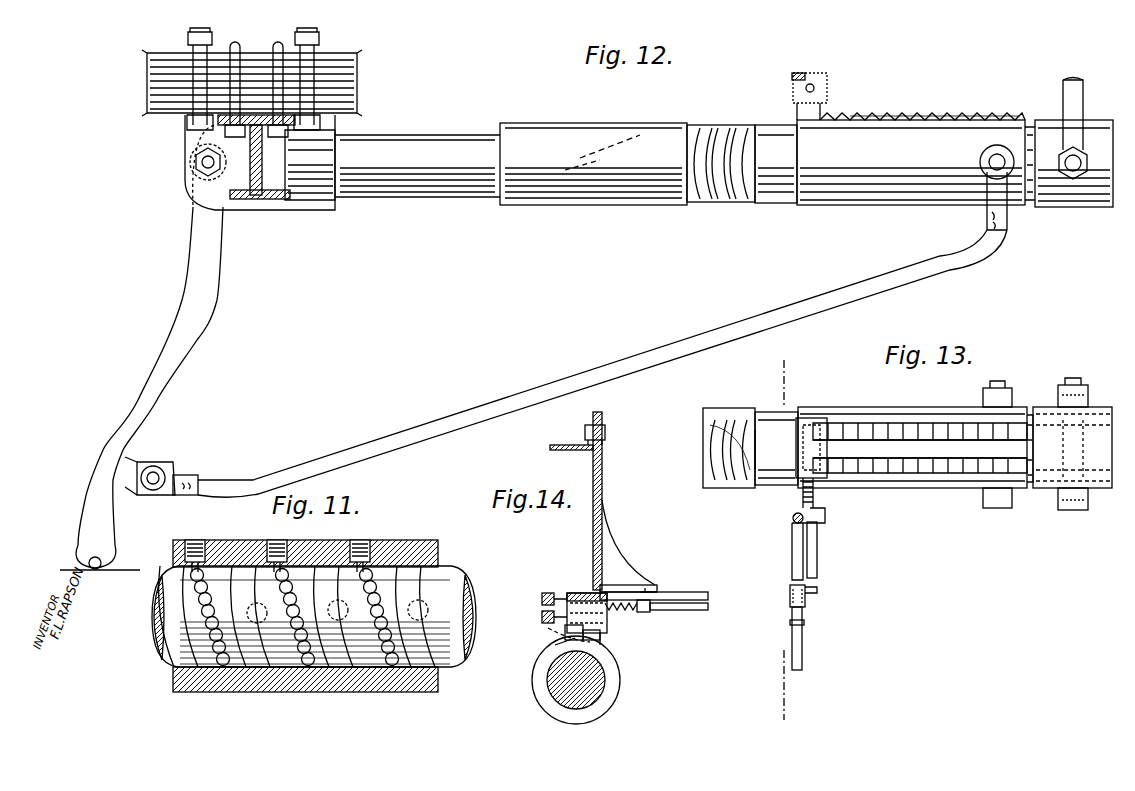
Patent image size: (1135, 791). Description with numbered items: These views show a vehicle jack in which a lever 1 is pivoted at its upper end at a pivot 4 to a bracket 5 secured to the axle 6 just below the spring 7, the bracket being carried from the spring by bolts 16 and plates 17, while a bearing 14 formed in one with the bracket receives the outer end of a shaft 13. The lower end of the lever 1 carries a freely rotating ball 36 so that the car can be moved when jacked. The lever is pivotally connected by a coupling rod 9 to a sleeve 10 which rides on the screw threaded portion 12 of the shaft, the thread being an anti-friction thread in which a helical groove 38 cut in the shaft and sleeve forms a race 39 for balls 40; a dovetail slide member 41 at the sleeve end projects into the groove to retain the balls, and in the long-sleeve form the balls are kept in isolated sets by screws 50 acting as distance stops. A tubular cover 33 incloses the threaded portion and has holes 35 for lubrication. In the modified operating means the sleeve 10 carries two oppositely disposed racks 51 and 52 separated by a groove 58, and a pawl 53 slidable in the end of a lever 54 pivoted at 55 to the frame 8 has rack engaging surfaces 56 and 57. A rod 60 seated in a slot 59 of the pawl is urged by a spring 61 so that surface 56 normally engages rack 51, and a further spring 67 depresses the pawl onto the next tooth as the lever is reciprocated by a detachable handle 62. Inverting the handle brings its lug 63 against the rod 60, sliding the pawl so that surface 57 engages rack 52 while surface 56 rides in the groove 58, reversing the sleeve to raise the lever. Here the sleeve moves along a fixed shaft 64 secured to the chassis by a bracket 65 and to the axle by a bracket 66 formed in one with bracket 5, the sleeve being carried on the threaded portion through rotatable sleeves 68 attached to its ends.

In FIG. 12, the lever 1 is at (196, 326).
In FIG. 12, the pivot 4 is at (202, 157).
In FIG. 12, the bracket 5 is at (184, 172).
In FIG. 12, the axle 6 is at (256, 200).
In FIG. 12, the spring 7 is at (345, 62).
In FIG. 14, the frame 8 is at (550, 448).
In FIG. 12, the coupling rod 9 is at (606, 368).
In FIG. 12, the sleeve 10 is at (874, 202).
In FIG. 11, the sleeve 10 is at (438, 551).
In FIG. 14, the sleeve 10 is at (612, 698).
In FIG. 13, the sleeve 10 is at (946, 489).
In FIG. 12, the screw threaded portion 12 is at (722, 192).
In FIG. 11, the screw threaded portion 12 is at (305, 616).
In FIG. 13, the screw threaded portion 12 is at (712, 440).
In FIG. 11, the shaft 13 is at (154, 614).
In FIG. 13, the bearing 14 is at (795, 542).
In FIG. 12, the bolts 16 is at (280, 55).
In FIG. 12, the plates 17 is at (188, 44).
In FIG. 12, the tubular cover 33 is at (540, 195).
In FIG. 13, the tubular cover 33 is at (718, 408).
In FIG. 12, the holes 35 is at (632, 160).
In FIG. 12, the ball 36 is at (96, 572).
In FIG. 11, the groove 38 is at (170, 650).
In FIG. 11, the race 39 is at (375, 680).
In FIG. 11, the balls 40 is at (228, 594).
In FIG. 13, the slide member 41 is at (767, 449).
In FIG. 11, the screws 50 is at (185, 551).
In FIG. 12, the rack 51 is at (920, 114).
In FIG. 14, the rack 51 is at (605, 642).
In FIG. 13, the rack 51 is at (892, 473).
In FIG. 12, the rack 52 is at (992, 114).
In FIG. 14, the rack 52 is at (550, 642).
In FIG. 13, the rack 52 is at (875, 423).
In FIG. 12, the pawl 53 is at (797, 110).
In FIG. 14, the pawl 53 is at (565, 595).
In FIG. 12, the lever 54 is at (792, 77).
In FIG. 14, the lever 54 is at (672, 592).
In FIG. 13, the lever 54 is at (792, 552).
In FIG. 14, the pivot 55 is at (645, 586).
In FIG. 13, the pivot 55 is at (792, 520).
In FIG. 14, the rack engaging surface 56 is at (600, 633).
In FIG. 14, the rack engaging surface 57 is at (565, 632).
In FIG. 14, the groove 58 is at (570, 640).
In FIG. 13, the groove 58 is at (920, 449).
In FIG. 12, the slot 59 is at (816, 90).
In FIG. 14, the slot 59 is at (604, 628).
In FIG. 12, the rod 60 is at (828, 80).
In FIG. 14, the rod 60 is at (698, 611).
In FIG. 13, the rod 60 is at (817, 552).
In FIG. 14, the spring 61 is at (640, 612).
In FIG. 13, the spring 61 is at (816, 500).
In FIG. 13, the handle 62 is at (802, 640).
In FIG. 13, the lug 63 is at (817, 592).
In FIG. 12, the fixed shaft 64 is at (1030, 202).
In FIG. 14, the fixed shaft 64 is at (552, 694).
In FIG. 13, the fixed shaft 64 is at (1029, 488).
In FIG. 12, the bracket 65 is at (1088, 204).
In FIG. 13, the bracket 65 is at (1040, 407).
In FIG. 12, the bracket 66 is at (324, 206).
In FIG. 14, the spring 67 is at (572, 592).
In FIG. 13, the spring 67 is at (827, 445).
In FIG. 12, the rotatable sleeves 68 is at (780, 204).
In FIG. 13, the rotatable sleeves 68 is at (775, 486).